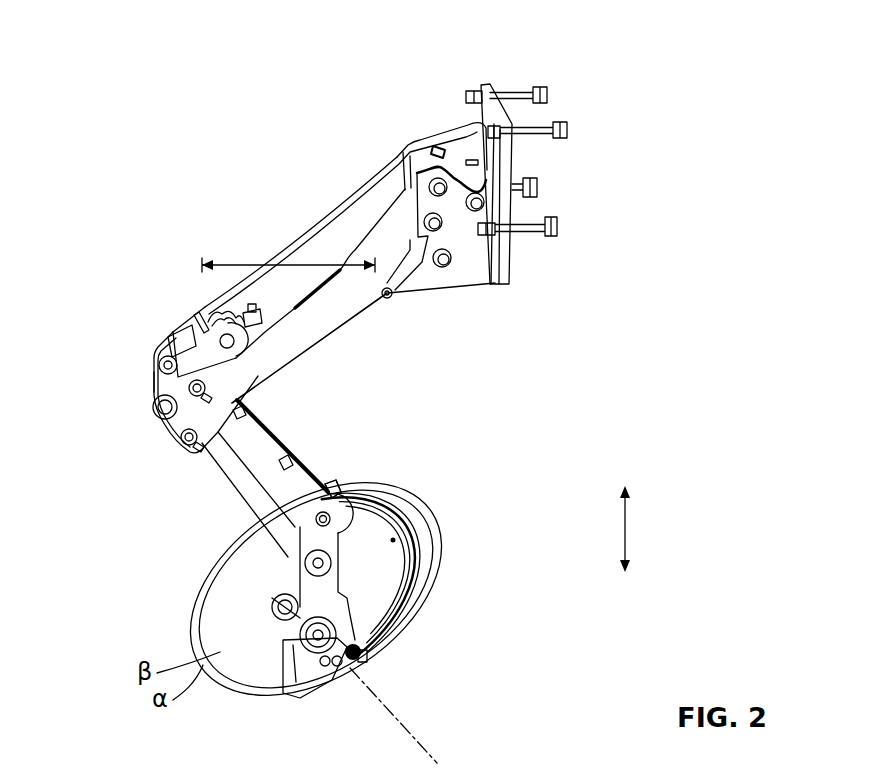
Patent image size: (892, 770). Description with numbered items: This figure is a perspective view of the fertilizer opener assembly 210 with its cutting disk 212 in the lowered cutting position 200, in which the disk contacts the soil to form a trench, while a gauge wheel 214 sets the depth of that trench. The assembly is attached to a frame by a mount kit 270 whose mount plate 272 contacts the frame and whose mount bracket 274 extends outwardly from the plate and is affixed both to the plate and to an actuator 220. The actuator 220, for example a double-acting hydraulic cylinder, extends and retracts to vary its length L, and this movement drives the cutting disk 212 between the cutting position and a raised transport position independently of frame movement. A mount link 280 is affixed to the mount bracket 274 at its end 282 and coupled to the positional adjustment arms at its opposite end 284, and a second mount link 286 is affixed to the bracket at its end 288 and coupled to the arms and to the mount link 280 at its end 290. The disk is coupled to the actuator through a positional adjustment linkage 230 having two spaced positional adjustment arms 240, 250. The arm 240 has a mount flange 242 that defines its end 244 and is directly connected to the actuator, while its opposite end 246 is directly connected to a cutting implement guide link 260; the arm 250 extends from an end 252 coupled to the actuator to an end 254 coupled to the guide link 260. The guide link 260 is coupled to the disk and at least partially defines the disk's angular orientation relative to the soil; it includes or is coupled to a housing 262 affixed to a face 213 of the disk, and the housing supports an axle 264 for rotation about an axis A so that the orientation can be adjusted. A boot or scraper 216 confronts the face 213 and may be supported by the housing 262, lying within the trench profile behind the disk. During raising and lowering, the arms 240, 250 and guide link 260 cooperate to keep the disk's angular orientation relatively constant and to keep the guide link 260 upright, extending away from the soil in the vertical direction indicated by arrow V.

The cutting position 200 is at (178, 604).
The fertilizer opener assembly 210 is at (552, 40).
The cutting disk 212 is at (203, 592).
The face 213 is at (233, 650).
The gauge wheel 214 is at (363, 493).
The boot or scraper 216 is at (297, 683).
The actuator 220 is at (287, 305).
The positional adjustment linkage 230 is at (153, 332).
The positional adjustment arm 240 is at (253, 435).
The mount flange 242 is at (165, 325).
The end 244 is at (213, 310).
The end 246 is at (400, 500).
The positional adjustment arm 250 is at (230, 473).
The end 252 is at (160, 403).
The end 254 is at (208, 638).
The cutting implement guide link 260 is at (396, 540).
The housing 262 is at (249, 642).
The axle 264 is at (405, 596).
The mount kit 270 is at (584, 129).
The mount plate 272 is at (498, 253).
The mount bracket 274 is at (468, 173).
The mount link 280 is at (337, 308).
The end 282 is at (453, 208).
The end 284 is at (188, 415).
The mount link 286 is at (370, 218).
The end 288 is at (428, 132).
The end 290 is at (160, 383).
The length L is at (222, 263).
The vertical direction V is at (627, 518).
The axis A is at (410, 727).